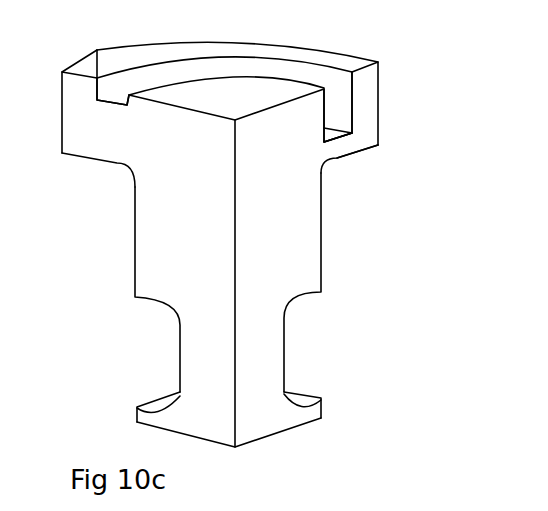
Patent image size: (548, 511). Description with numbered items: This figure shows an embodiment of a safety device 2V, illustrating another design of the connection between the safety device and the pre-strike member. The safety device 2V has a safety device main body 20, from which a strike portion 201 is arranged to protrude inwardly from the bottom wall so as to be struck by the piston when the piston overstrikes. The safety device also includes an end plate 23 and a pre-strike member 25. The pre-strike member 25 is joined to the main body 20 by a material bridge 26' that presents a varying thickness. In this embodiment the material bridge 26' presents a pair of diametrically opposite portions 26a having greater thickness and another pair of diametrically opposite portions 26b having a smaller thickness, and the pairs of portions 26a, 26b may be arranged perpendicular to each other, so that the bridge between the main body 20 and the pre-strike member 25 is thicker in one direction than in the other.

The safety device main body 20 is at (145, 248).
The strike portion 201 is at (242, 93).
The end plate 23 is at (143, 415).
The pre-strike member 25 is at (366, 90).
The portions having greater thickness 26a is at (118, 95).
The portions having smaller thickness 26b is at (346, 133).
The material bridge 26' is at (369, 200).
The safety device 2V is at (377, 389).